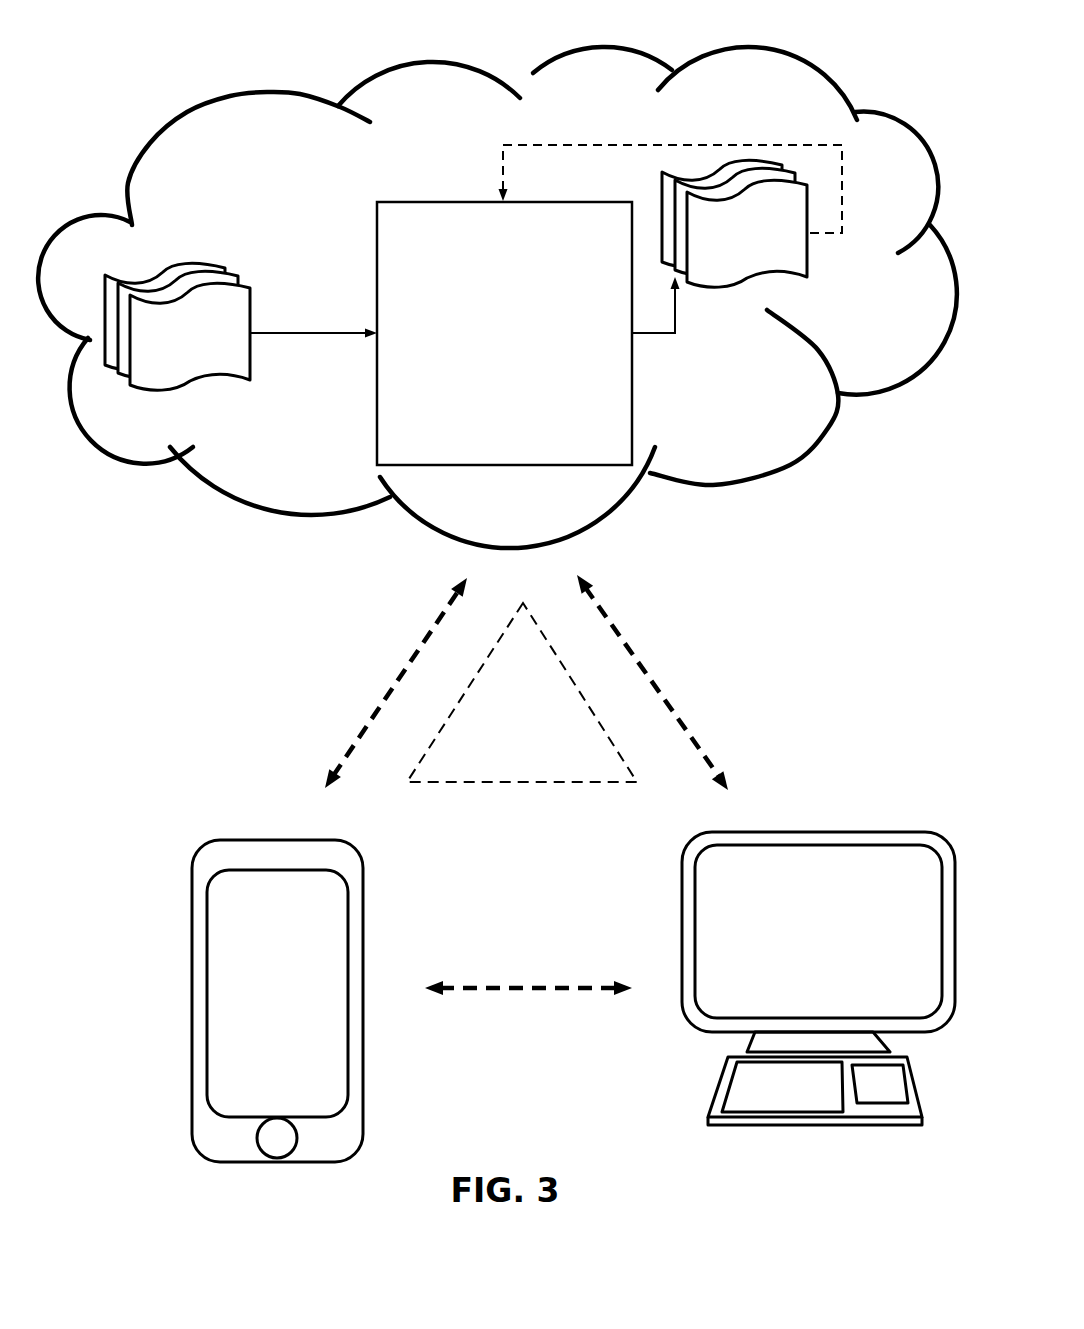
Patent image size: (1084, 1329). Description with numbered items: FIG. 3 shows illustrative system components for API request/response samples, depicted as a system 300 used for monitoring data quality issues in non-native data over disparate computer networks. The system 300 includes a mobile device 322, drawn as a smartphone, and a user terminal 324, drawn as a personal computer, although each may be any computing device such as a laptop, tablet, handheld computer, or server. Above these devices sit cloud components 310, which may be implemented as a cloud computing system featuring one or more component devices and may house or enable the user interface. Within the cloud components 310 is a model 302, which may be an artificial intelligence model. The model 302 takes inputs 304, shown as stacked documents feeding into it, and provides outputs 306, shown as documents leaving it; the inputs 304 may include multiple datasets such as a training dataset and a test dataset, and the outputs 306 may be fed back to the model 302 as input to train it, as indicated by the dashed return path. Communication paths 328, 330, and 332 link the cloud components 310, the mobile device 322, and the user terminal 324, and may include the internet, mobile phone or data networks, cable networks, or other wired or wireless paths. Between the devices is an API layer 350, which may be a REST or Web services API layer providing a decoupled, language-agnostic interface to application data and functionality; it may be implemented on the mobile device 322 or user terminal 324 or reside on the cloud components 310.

The system 300 is at (482, 43).
The model 302 is at (487, 348).
The inputs 304 is at (198, 258).
The outputs 306 is at (785, 265).
The cloud components 310 is at (804, 108).
The mobile device 322 is at (262, 812).
The user terminal 324 is at (812, 823).
The communication path 328 is at (350, 668).
The communication path 330 is at (734, 636).
The communication path 332 is at (520, 958).
The API layer 350 is at (507, 720).